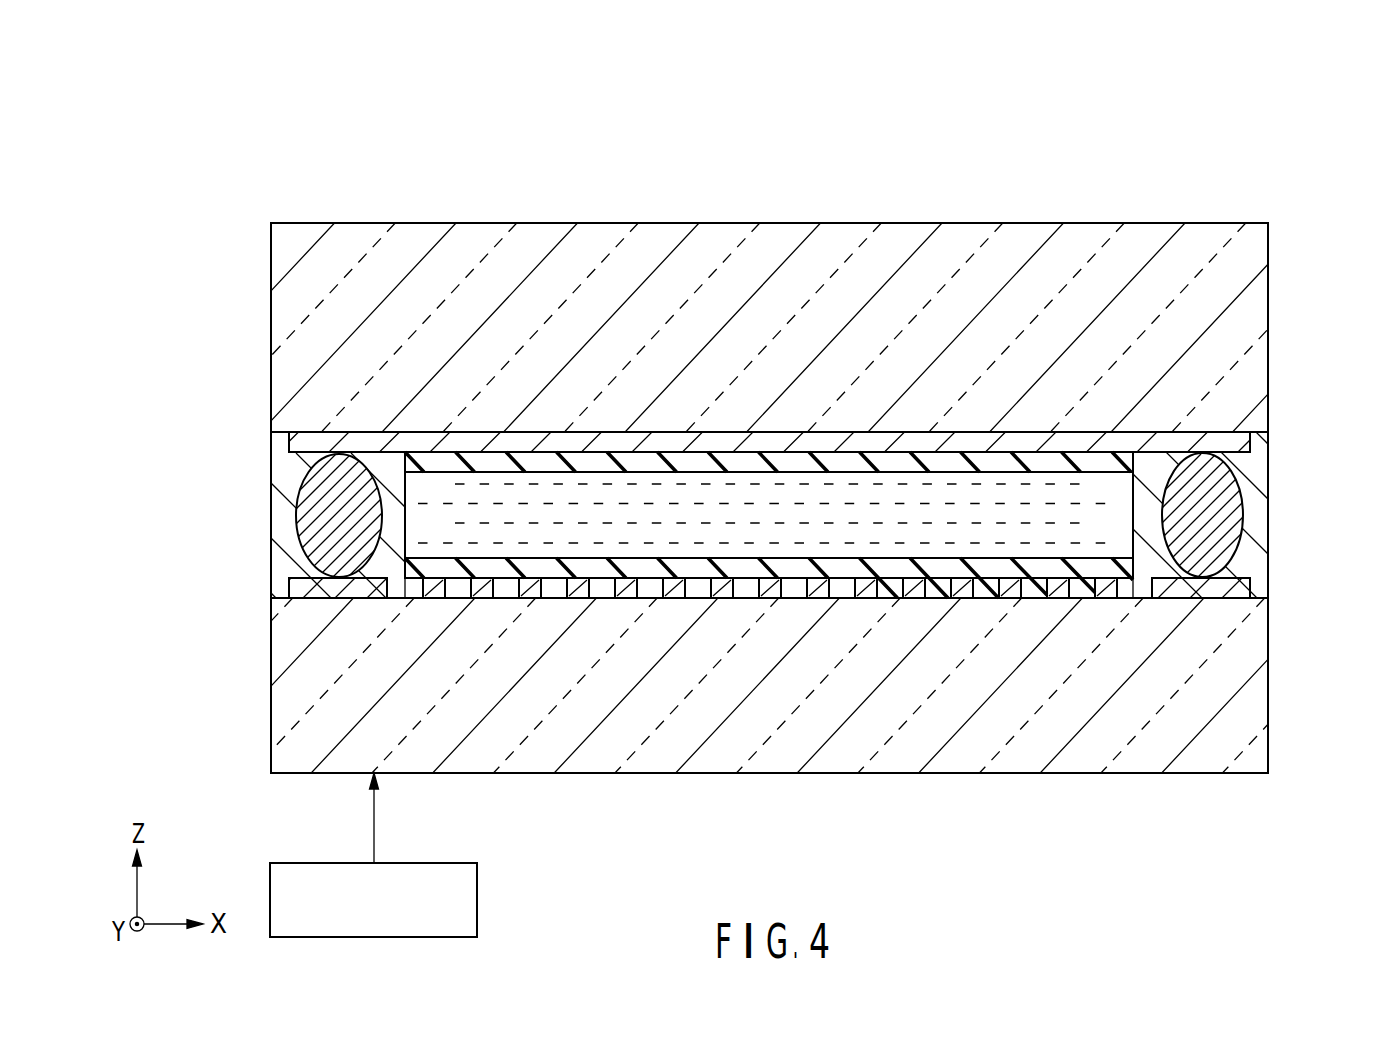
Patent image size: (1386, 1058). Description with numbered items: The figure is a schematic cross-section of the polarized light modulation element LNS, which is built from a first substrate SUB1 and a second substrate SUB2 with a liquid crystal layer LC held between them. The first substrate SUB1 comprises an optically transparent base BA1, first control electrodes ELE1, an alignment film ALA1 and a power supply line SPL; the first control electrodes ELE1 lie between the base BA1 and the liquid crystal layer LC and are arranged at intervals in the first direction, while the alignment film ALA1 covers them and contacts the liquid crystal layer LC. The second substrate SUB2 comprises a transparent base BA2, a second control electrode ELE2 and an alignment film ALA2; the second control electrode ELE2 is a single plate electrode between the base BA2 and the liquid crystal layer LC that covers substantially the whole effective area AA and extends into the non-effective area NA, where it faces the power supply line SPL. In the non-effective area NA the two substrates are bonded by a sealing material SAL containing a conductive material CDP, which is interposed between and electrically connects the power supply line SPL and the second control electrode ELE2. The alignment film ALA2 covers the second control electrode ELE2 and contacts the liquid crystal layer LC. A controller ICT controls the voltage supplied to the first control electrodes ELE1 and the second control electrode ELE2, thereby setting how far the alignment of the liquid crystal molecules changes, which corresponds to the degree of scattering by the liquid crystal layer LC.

The polarized light modulation element LNS is at (940, 104).
The non-effective area NA is at (1268, 223).
The effective area AA is at (1133, 158).
The second substrate SUB2 is at (1280, 223).
The base BA2 is at (272, 314).
The second control electrode ELE2 is at (289, 446).
The alignment film ALA2 is at (1240, 452).
The liquid crystal layer LC is at (1117, 526).
The sealing material SAL is at (299, 496).
The conductive material CDP is at (298, 529).
The power supply line SPL is at (290, 588).
The first substrate SUB1 is at (1280, 557).
The base BA1 is at (272, 704).
The first control electrodes ELE1 is at (528, 598).
The alignment film ALA1 is at (1084, 598).
The controller ICT is at (477, 903).